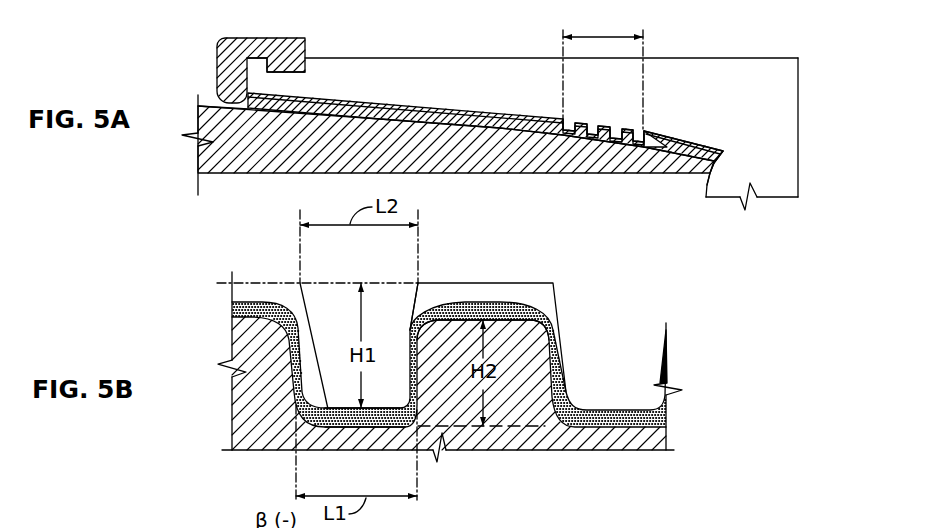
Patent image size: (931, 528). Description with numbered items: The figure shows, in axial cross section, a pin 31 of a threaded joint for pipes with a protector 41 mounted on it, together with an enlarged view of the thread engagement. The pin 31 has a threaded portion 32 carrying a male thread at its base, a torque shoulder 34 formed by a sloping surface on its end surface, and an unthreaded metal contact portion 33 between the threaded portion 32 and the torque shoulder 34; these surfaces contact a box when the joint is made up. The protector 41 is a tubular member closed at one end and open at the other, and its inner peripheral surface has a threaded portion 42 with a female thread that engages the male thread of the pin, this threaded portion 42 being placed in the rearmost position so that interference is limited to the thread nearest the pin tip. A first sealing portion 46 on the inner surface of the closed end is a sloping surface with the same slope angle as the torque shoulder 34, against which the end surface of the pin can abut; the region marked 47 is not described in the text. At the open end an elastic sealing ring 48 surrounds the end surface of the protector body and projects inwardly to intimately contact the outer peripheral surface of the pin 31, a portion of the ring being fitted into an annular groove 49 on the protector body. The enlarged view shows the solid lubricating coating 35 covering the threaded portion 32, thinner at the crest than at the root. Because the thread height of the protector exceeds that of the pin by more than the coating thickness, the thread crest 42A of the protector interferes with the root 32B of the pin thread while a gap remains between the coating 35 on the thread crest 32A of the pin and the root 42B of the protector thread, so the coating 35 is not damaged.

In FIG. 5A, the pin 31 is at (420, 153).
In FIG. 5A, the threaded portion 32 is at (433, 109).
In FIG. 5B, the threaded portion 32 is at (243, 398).
In FIG. 5A, the unthreaded metal contact portion 33 is at (711, 153).
In FIG. 5A, the torque shoulder 34 is at (699, 166).
In FIG. 5B, the solid lubricating coating 35 is at (224, 307).
In FIG. 5A, the protector for a pin 41 is at (522, 99).
In FIG. 5B, the protector for a pin 41 is at (637, 523).
In FIG. 5A, the threaded portion 42 is at (616, 121).
In FIG. 5B, the thread crest 42A is at (353, 410).
In FIG. 5B, the root 42B is at (543, 276).
In FIG. 5A, the first sealing portion 46 is at (731, 163).
In FIG. 5A, the corner 47 is at (209, 96).
In FIG. 5A, the elastic sealing ring 48 is at (265, 38).
In FIG. 5A, the annular groove 49 is at (291, 82).
In FIG. 5B, the thread crest 32A is at (512, 322).
In FIG. 5B, the root 32B is at (378, 428).